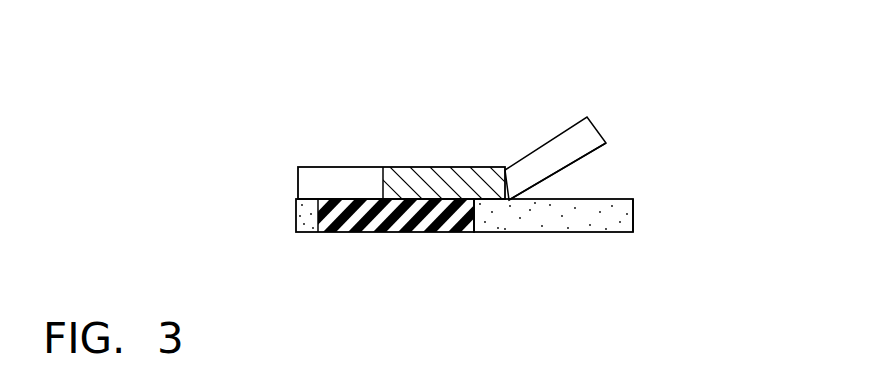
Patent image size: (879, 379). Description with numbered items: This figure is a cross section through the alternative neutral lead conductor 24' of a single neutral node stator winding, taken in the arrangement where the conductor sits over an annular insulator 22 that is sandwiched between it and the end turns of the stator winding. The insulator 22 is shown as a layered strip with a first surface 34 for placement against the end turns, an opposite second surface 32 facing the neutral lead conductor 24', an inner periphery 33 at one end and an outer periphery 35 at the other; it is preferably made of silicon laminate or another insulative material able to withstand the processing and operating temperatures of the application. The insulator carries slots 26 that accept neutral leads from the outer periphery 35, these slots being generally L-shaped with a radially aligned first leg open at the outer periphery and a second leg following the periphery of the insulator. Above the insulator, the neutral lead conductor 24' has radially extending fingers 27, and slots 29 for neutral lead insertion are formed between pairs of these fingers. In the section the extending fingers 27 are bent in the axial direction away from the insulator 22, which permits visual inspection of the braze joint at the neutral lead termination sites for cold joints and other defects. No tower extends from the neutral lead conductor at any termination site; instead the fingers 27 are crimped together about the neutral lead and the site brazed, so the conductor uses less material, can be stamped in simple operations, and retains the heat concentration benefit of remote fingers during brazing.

The insulator 22 is at (355, 241).
The neutral lead conductor 24' is at (378, 136).
The slots 26 is at (583, 220).
The radially extending fingers 27 is at (553, 137).
The slots 29 is at (573, 153).
The second surface 32 is at (355, 199).
The inner periphery 33 is at (312, 213).
The first surface 34 is at (435, 233).
The outer periphery 35 is at (635, 222).